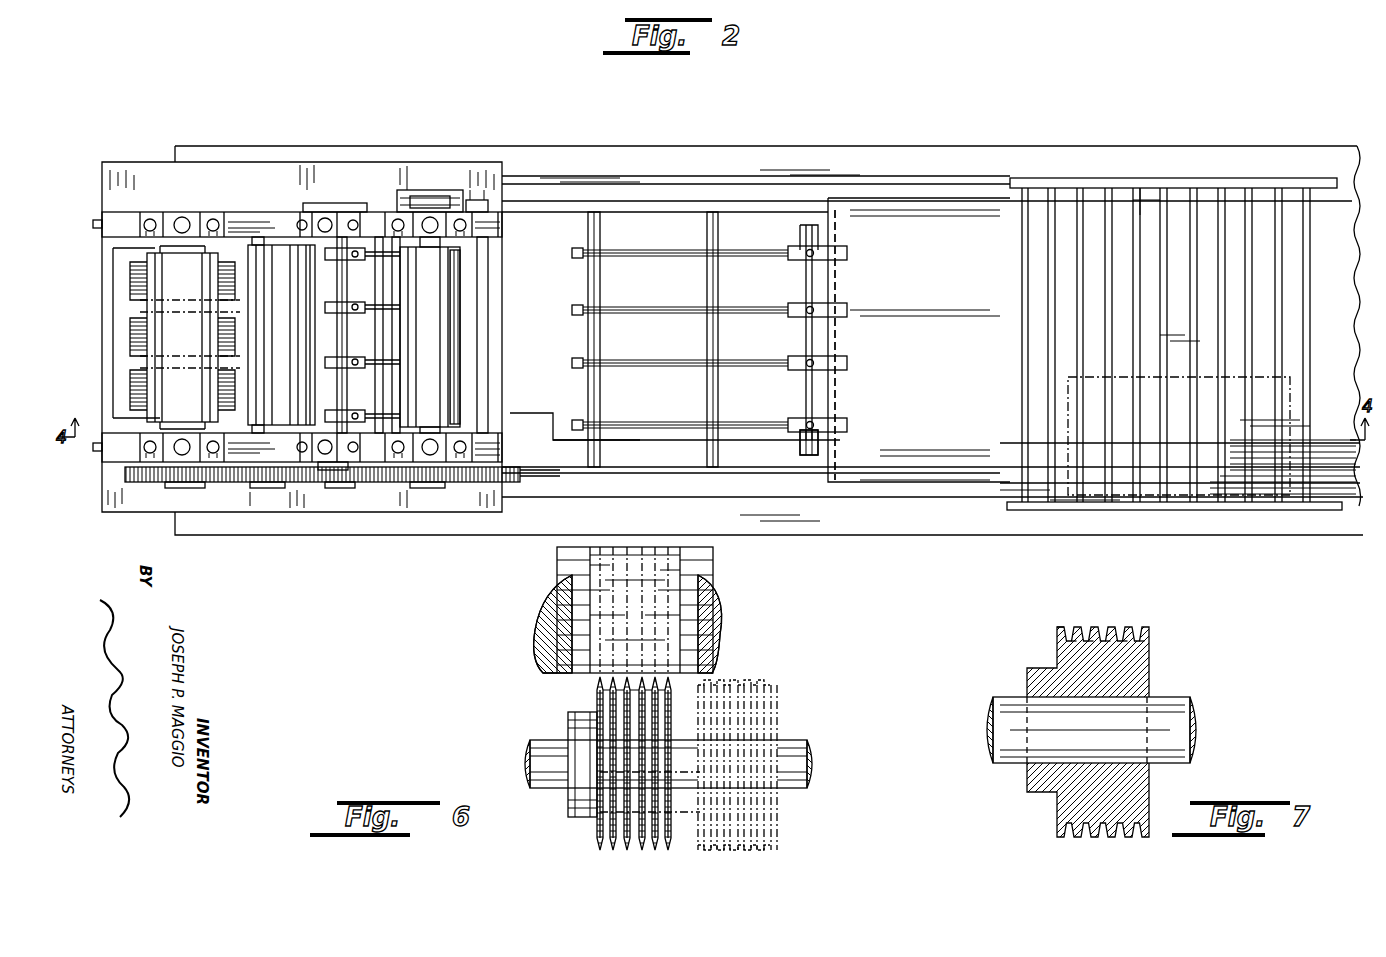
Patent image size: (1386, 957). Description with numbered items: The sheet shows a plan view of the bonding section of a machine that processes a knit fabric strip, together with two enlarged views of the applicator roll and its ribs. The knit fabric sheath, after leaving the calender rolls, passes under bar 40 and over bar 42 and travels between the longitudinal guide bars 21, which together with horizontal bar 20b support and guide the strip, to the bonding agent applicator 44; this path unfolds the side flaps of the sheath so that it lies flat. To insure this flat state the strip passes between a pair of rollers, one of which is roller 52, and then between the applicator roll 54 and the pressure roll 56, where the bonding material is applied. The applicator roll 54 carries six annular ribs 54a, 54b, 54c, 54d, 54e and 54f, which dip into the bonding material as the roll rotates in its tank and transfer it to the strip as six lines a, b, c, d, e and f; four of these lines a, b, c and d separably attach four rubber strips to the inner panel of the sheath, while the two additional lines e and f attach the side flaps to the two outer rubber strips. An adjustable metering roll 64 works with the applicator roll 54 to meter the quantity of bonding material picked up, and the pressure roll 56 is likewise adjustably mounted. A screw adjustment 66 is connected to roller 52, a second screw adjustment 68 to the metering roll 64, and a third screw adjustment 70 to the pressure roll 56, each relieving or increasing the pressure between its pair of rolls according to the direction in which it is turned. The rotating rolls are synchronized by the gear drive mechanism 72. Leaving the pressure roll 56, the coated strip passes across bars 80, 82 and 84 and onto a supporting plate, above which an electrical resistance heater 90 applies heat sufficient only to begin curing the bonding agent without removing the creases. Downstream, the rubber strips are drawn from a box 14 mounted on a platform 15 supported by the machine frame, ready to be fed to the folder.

In FIG. 2, the box 14 is at (1285, 405).
In FIG. 2, the platform 15 is at (1165, 185).
In FIG. 2, the horizontal bar 20b is at (835, 406).
In FIG. 2, the longitudinal bars 21 is at (746, 205).
In FIG. 2, the bar 40 is at (703, 451).
In FIG. 2, the bar 42 is at (590, 284).
In FIG. 2, the bonding agent applicator 44 is at (138, 206).
In FIG. 2, the roller 52 is at (465, 388).
In FIG. 2, the applicator roll 54 is at (123, 381).
In FIG. 6, the applicator roll 54 is at (593, 815).
In FIG. 7, the applicator roll 54 is at (1147, 676).
In FIG. 6, the annular rib 54a is at (608, 851).
In FIG. 7, the annular rib 54a is at (1074, 625).
In FIG. 6, the annular rib 54b is at (627, 851).
In FIG. 7, the annular rib 54b is at (1091, 625).
In FIG. 6, the annular rib 54c is at (642, 850).
In FIG. 7, the annular rib 54c is at (1107, 625).
In FIG. 6, the annular rib 54d is at (657, 850).
In FIG. 7, the annular rib 54d is at (1127, 625).
In FIG. 6, the annular rib 54e is at (596, 833).
In FIG. 7, the annular rib 54e is at (1060, 625).
In FIG. 6, the annular rib 54f is at (672, 694).
In FIG. 7, the annular rib 54f is at (1142, 623).
In FIG. 2, the pressure roll 56 is at (166, 300).
In FIG. 6, the pressure roll 56 is at (549, 644).
In FIG. 2, the metering roll 64 is at (295, 280).
In FIG. 2, the screw adjustment 66 is at (432, 220).
In FIG. 2, the screw adjustment 68 is at (326, 216).
In FIG. 2, the screw adjustment 70 is at (186, 220).
In FIG. 2, the gear drive mechanism 72 is at (294, 496).
In FIG. 2, the bar 80 is at (257, 265).
In FIG. 2, the bar 82 is at (384, 240).
In FIG. 2, the bar 84 is at (810, 455).
In FIG. 2, the electrical resistance heater 90 is at (930, 419).
In FIG. 6, the line of bonding material a is at (584, 590).
In FIG. 6, the line of bonding material b is at (590, 615).
In FIG. 6, the line of bonding material c is at (683, 615).
In FIG. 6, the line of bonding material d is at (673, 590).
In FIG. 6, the line of bonding material e is at (593, 565).
In FIG. 6, the line of bonding material f is at (676, 570).